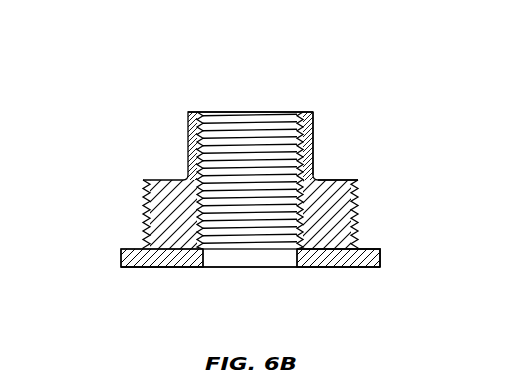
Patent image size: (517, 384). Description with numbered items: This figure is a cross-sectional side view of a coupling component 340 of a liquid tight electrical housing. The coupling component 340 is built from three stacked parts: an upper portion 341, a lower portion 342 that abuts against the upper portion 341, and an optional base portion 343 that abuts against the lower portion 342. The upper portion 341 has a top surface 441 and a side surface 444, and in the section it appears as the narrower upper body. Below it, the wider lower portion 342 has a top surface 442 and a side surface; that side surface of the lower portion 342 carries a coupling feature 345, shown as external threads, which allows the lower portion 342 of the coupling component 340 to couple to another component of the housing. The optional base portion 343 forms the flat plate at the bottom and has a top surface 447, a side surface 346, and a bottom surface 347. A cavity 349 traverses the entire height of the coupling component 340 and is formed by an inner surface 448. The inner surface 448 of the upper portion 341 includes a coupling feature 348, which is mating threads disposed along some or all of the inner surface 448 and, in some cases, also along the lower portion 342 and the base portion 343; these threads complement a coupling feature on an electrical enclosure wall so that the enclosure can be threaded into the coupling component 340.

The coupling component 340 is at (106, 47).
The upper portion 341 is at (176, 116).
The lower portion 342 is at (151, 173).
The base portion 343 is at (165, 276).
The coupling feature 345 is at (136, 208).
The side surface 346 is at (381, 262).
The bottom surface 347 is at (323, 268).
The coupling feature 348 is at (257, 104).
The cavity 349 is at (253, 260).
The top surface 441 is at (308, 112).
The top surface 442 is at (334, 178).
The side surface 444 is at (314, 138).
The top surface 447 is at (378, 250).
The inner surface 448 is at (210, 112).